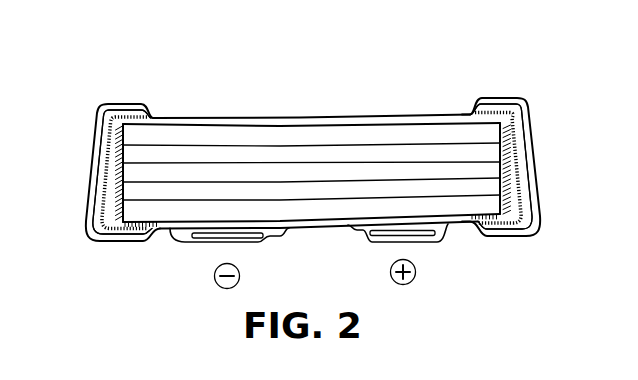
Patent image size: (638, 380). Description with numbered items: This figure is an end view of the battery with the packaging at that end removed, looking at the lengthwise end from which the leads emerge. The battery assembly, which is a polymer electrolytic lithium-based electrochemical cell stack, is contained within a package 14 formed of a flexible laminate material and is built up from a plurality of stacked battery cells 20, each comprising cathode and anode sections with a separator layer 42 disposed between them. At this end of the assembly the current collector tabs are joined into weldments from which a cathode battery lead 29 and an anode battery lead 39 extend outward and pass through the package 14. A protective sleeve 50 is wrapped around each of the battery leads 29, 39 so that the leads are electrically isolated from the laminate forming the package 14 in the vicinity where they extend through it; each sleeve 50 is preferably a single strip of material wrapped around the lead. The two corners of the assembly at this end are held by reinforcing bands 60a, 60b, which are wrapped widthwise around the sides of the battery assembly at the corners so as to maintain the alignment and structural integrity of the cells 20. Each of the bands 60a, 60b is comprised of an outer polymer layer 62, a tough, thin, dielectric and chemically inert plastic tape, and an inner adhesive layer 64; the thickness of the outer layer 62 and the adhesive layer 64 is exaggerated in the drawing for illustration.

The package 14 is at (132, 103).
The battery cell 20 is at (352, 205).
The cathode battery lead 29 is at (423, 236).
The anode battery lead 39 is at (210, 238).
The separator layer 42 is at (121, 183).
The protective sleeve 50 is at (184, 241).
The reinforcing band 60a is at (98, 127).
The reinforcing band 60b is at (521, 98).
The outer polymer layer 62 is at (93, 150).
The inner adhesive layer 64 is at (106, 178).